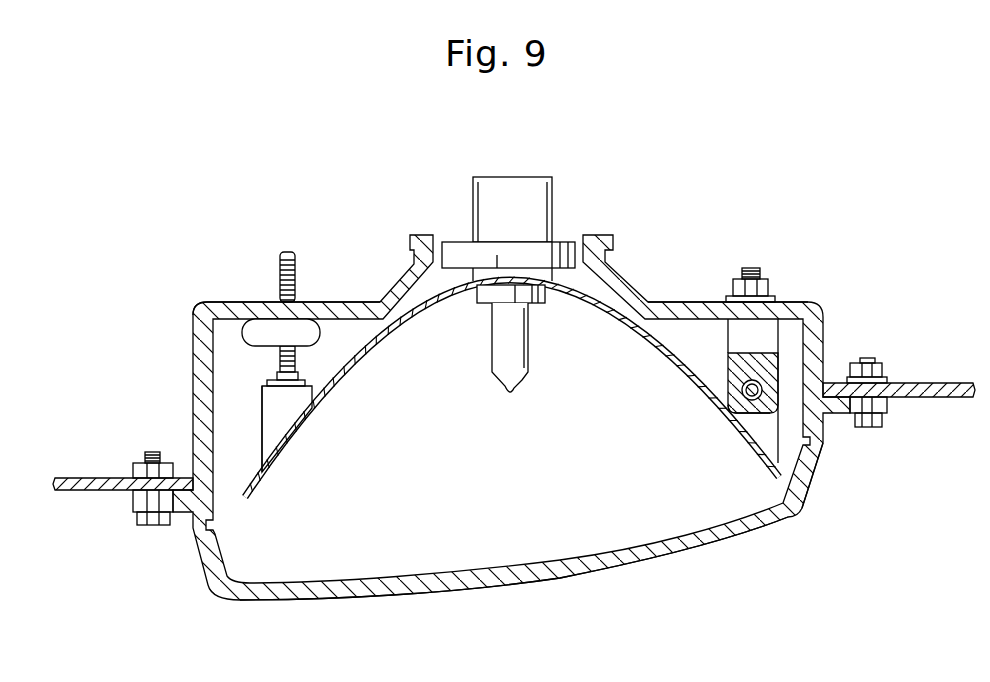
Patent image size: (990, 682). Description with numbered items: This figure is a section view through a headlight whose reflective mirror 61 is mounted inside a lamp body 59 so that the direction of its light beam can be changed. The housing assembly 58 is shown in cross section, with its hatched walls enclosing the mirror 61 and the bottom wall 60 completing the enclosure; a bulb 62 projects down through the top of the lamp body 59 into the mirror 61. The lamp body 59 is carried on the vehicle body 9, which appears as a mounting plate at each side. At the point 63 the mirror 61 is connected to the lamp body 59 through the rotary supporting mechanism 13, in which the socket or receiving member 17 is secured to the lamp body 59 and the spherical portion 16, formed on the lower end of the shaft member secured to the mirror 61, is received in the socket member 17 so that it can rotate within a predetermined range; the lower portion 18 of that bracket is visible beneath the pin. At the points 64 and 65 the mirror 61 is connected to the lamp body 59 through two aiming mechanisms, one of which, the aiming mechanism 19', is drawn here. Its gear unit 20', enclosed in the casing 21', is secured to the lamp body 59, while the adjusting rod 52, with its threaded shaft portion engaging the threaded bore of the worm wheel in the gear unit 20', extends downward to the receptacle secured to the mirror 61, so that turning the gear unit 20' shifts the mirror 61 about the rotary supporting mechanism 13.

The lamp housing 58 is at (848, 237).
The lamp body 59 is at (667, 302).
The bottom wall of housing 60 is at (720, 537).
The mirror 61 is at (348, 373).
The bulb 62 is at (507, 377).
The point 63 is at (716, 385).
The point 64 is at (770, 430).
The point 65 is at (260, 385).
The adjusting rod 52 is at (288, 250).
The casing 21' is at (284, 277).
The gear unit 20' is at (231, 332).
The aiming mechanism 19' is at (182, 408).
The vehicle body 9 is at (73, 492).
The spherical portion 16 is at (775, 382).
The socket member 17 is at (763, 383).
The bracket lower portion 18 is at (742, 393).
The rotary supporting mechanism 13 is at (728, 370).